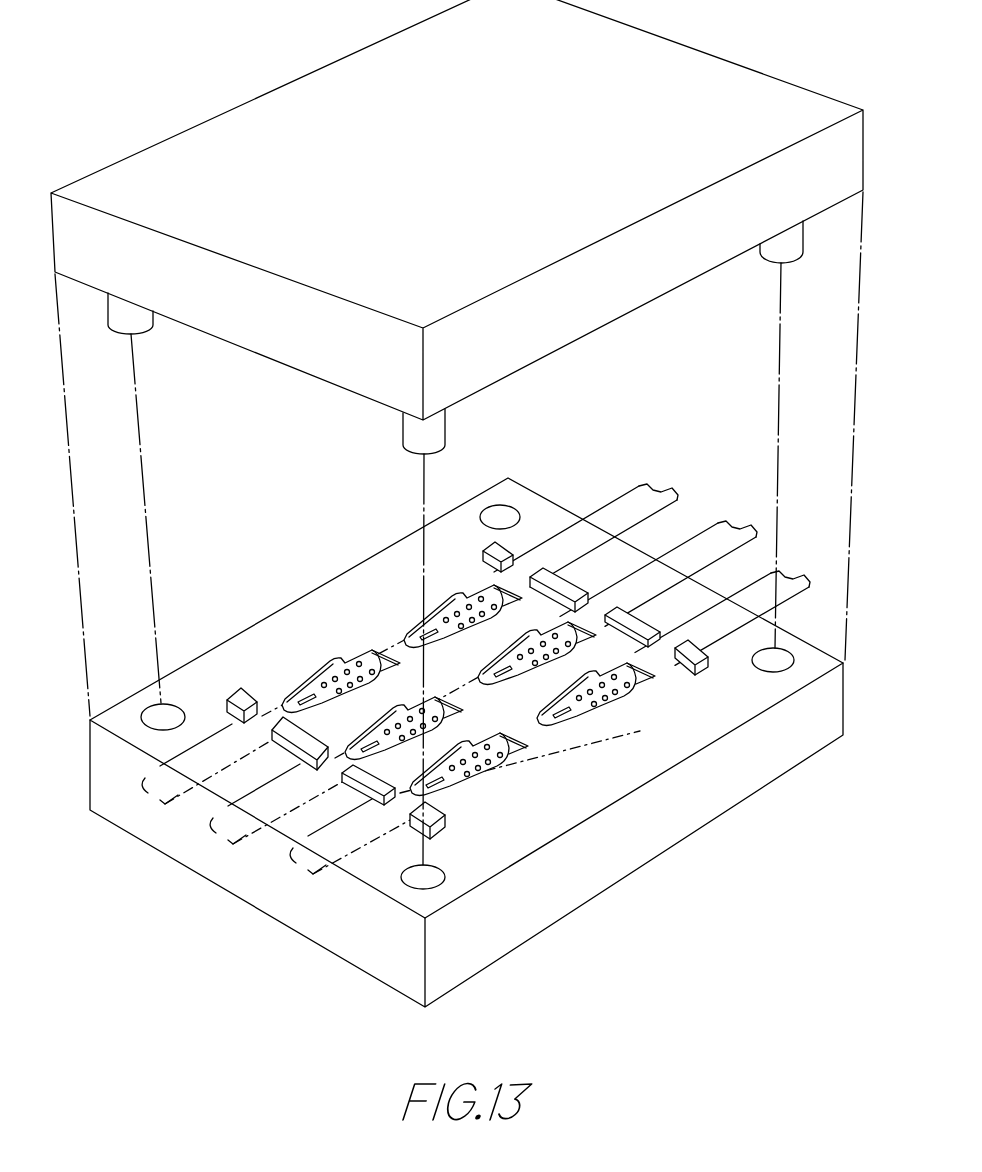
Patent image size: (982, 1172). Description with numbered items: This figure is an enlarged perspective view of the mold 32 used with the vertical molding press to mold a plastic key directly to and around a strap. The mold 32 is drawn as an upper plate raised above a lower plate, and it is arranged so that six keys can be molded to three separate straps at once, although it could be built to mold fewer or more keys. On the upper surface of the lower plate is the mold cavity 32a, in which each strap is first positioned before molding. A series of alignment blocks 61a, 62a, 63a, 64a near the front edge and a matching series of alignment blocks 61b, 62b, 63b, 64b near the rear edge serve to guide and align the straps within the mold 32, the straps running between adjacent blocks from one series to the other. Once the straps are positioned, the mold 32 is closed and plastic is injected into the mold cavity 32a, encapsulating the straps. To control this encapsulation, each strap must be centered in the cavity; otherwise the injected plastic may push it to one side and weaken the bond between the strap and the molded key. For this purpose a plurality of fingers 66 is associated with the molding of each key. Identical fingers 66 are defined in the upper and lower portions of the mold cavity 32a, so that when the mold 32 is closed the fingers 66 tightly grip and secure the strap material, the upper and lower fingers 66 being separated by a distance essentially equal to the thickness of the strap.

The mold 32 is at (466, 742).
The mold cavity 32a is at (628, 700).
The alignment block 61a is at (230, 714).
The alignment block 62a is at (292, 752).
The alignment block 63a is at (352, 793).
The alignment block 64a is at (417, 827).
The alignment block 61b is at (508, 550).
The alignment block 62b is at (575, 578).
The alignment block 63b is at (648, 618).
The alignment block 64b is at (698, 645).
The fingers 66 is at (335, 679).